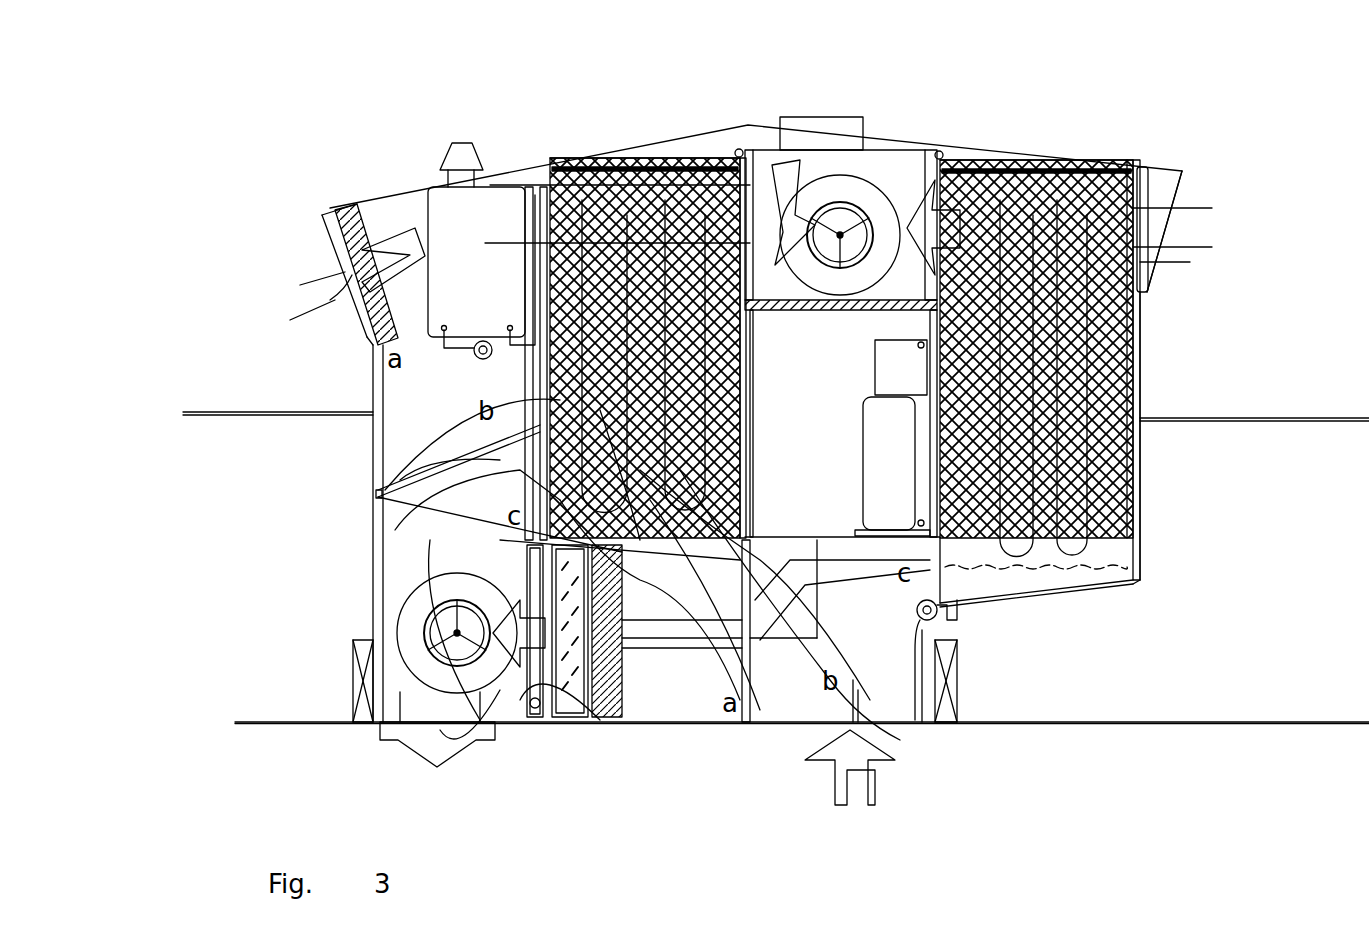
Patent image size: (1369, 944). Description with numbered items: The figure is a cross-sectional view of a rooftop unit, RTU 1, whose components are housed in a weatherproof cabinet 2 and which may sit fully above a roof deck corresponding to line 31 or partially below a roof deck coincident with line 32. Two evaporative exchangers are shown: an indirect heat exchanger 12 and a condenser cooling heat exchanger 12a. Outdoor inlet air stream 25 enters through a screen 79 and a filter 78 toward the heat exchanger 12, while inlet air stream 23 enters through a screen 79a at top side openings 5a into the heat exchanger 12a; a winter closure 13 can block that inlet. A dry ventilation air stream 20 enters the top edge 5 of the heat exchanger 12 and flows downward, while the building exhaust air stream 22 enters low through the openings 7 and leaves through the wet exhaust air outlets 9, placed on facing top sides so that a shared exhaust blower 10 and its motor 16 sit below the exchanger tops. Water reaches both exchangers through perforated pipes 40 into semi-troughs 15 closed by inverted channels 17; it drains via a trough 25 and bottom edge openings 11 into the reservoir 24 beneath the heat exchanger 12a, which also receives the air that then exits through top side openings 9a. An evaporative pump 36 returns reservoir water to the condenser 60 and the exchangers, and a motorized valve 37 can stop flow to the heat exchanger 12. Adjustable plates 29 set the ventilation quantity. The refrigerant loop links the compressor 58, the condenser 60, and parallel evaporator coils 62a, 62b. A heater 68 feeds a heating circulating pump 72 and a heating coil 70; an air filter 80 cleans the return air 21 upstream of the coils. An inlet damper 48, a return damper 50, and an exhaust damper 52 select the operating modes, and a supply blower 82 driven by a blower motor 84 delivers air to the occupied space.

The RTU 1 is at (329, 105).
The weatherproof cabinet 2 is at (655, 160).
The top edge 5 is at (543, 180).
The top side openings 5a is at (1160, 262).
The openings 7 is at (880, 640).
The wet exhaust air outlets 9 is at (765, 210).
The top side openings 9a is at (860, 205).
The exhaust blower 10 is at (850, 200).
The bottom edge openings 11 is at (1085, 580).
The indirect heat exchanger 12 is at (570, 160).
The condenser cooling heat exchanger 12a is at (1100, 165).
The winter closure 13 is at (1143, 300).
The semi-troughs 15 is at (632, 160).
The motor 16 is at (850, 215).
The inverted channels 17 is at (700, 160).
The dry ventilation air stream 20 is at (500, 200).
The return air 21 is at (870, 690).
The building exhaust air stream 22 is at (850, 784).
The inlet air stream 23 is at (1190, 232).
The reservoir 24 is at (1040, 585).
The inlet air stream 25 is at (330, 300).
The adjustable plates 29 is at (535, 215).
The roof deck line 31 is at (1180, 722).
The roof deck line 32 is at (1275, 422).
The evaporative pump 36 is at (958, 655).
The motorized valve 37 is at (945, 605).
The perforated pipes 40 is at (738, 150).
The inlet damper 48 is at (385, 495).
The return damper 50 is at (790, 700).
The exhaust damper 52 is at (1130, 385).
The compressor 58 is at (905, 420).
The condenser 60 is at (905, 370).
The evaporator coil 62a is at (470, 515).
The evaporator coil 62b is at (570, 718).
The heater 68 is at (455, 235).
The heating coil 70 is at (552, 720).
The heating circulating pump 72 is at (480, 360).
The filter 78 is at (380, 200).
The screen 79 is at (338, 250).
The screen 79a is at (1178, 195).
The air filter 80 is at (620, 718).
The supply blower 82 is at (476, 740).
The blower motor 84 is at (480, 700).